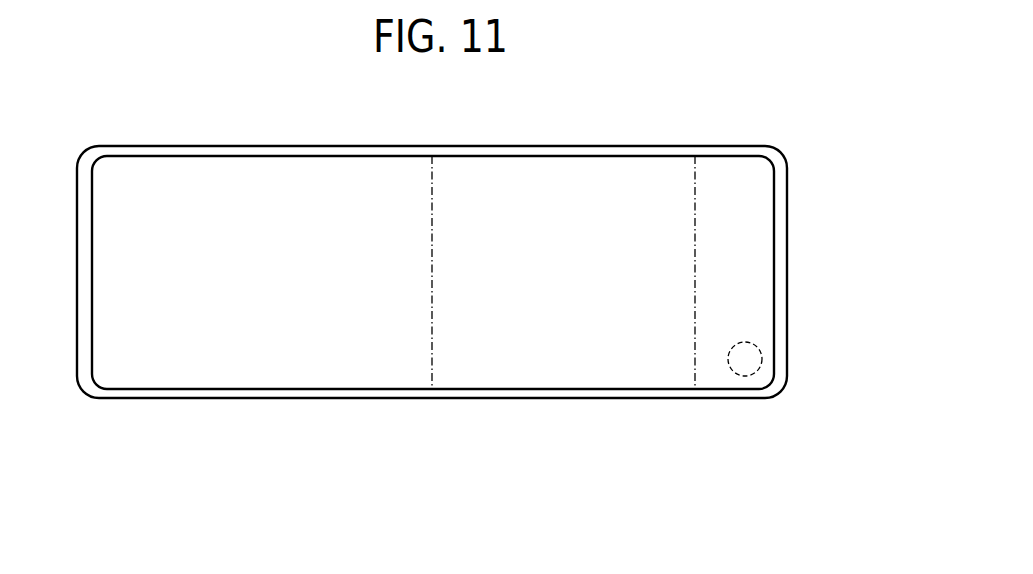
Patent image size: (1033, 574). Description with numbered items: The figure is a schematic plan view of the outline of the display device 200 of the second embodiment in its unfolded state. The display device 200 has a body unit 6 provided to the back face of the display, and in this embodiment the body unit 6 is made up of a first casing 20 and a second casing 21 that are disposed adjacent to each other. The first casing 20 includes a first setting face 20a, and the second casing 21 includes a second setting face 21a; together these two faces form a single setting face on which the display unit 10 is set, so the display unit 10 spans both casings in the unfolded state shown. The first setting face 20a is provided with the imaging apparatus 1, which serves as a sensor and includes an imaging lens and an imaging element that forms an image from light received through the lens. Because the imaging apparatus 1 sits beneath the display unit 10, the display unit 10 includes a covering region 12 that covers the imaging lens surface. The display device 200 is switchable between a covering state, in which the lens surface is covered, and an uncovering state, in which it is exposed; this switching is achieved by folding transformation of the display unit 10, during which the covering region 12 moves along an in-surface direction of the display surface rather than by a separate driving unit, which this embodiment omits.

The display device 200 is at (781, 104).
The display unit 10 is at (325, 192).
The covering region 12 is at (751, 285).
The imaging apparatus 1 is at (762, 362).
The second setting face 21a is at (217, 391).
The second casing 21 is at (373, 398).
The first casing 20 is at (474, 398).
The first setting face 20a is at (633, 390).
The body unit 6 is at (494, 512).